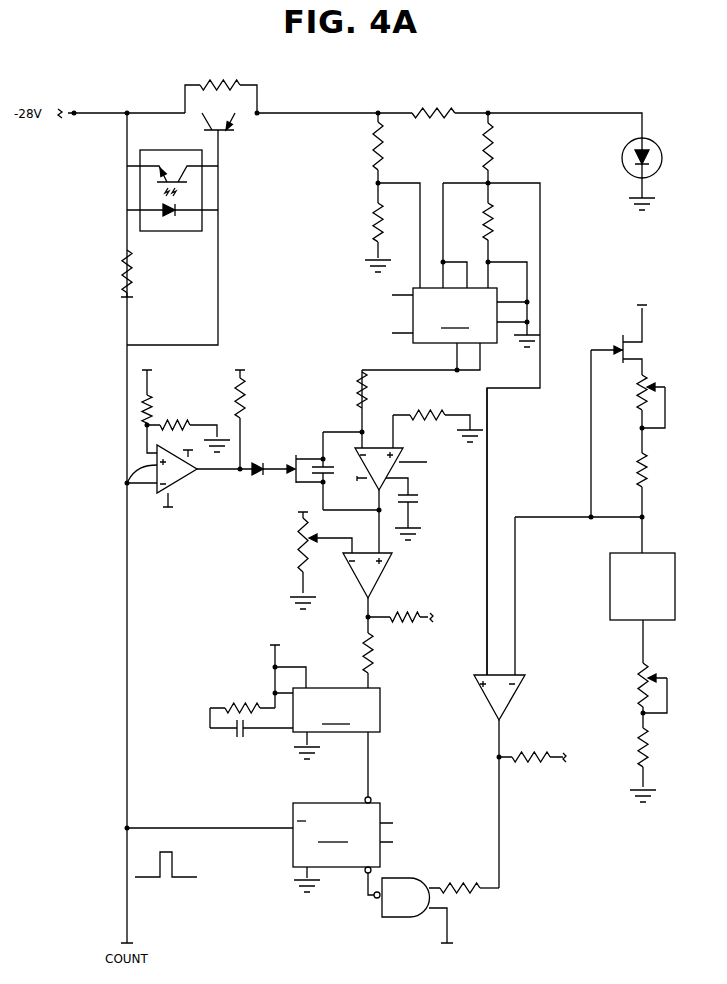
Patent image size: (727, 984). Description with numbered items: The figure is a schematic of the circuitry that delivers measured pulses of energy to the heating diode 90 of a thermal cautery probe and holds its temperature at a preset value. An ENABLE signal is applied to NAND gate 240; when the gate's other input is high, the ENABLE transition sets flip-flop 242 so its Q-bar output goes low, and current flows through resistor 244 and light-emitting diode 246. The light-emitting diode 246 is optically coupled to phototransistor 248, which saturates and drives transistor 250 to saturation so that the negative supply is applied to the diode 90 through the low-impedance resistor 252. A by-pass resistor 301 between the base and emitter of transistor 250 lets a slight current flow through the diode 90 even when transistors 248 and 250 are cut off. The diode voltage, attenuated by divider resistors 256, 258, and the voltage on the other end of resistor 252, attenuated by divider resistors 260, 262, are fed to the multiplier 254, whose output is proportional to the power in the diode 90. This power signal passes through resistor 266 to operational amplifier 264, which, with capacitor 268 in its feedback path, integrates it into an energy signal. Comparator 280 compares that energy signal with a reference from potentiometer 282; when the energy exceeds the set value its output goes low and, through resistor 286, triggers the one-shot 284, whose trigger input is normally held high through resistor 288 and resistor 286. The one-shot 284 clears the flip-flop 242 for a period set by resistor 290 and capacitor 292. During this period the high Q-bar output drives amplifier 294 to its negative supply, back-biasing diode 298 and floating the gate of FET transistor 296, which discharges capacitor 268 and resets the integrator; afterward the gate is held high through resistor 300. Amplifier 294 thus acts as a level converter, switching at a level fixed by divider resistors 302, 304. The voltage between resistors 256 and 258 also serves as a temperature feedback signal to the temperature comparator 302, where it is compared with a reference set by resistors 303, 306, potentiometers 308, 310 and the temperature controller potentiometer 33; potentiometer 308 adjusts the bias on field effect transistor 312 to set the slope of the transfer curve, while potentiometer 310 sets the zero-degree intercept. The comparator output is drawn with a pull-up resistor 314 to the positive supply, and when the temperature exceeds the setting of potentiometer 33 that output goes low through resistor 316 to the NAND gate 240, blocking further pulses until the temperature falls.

The by-pass resistor 301 is at (214, 84).
The transistor 250 is at (231, 134).
The phototransistor 248 is at (190, 185).
The light-emitting diode 246 is at (170, 214).
The resistor 244 is at (132, 270).
The diode 90 is at (655, 147).
The resistor 252 is at (428, 107).
The resistor 260 is at (383, 148).
The resistor 256 is at (493, 145).
The resistor 262 is at (375, 228).
The resistor 258 is at (493, 222).
The multiplier 254 is at (402, 329).
The resistor 266 is at (358, 398).
The operational amplifier 264 is at (396, 466).
The capacitor 268 is at (328, 457).
The FET transistor 296 is at (291, 488).
The diode 298 is at (254, 474).
The resistor 300 is at (245, 398).
The temperature comparator 302 is at (150, 393).
The resistor 304 is at (176, 422).
The amplifier 294 is at (125, 484).
The potentiometer 282 is at (300, 541).
The comparator 280 is at (364, 574).
The resistor 288 is at (403, 621).
The resistor 286 is at (363, 652).
The one-shot 284 is at (358, 716).
The resistor 290 is at (250, 705).
The capacitor 292 is at (238, 737).
The flip-flop 242 is at (272, 849).
The NAND gate 240 is at (412, 906).
The resistor 316 is at (477, 883).
The resistor 314 is at (545, 762).
The field effect transistor 312 is at (623, 343).
The potentiometer 308 is at (650, 380).
The resistor 303 is at (648, 455).
The temperature controller potentiometer 33 is at (611, 581).
The potentiometer 310 is at (640, 674).
The resistor 306 is at (655, 748).